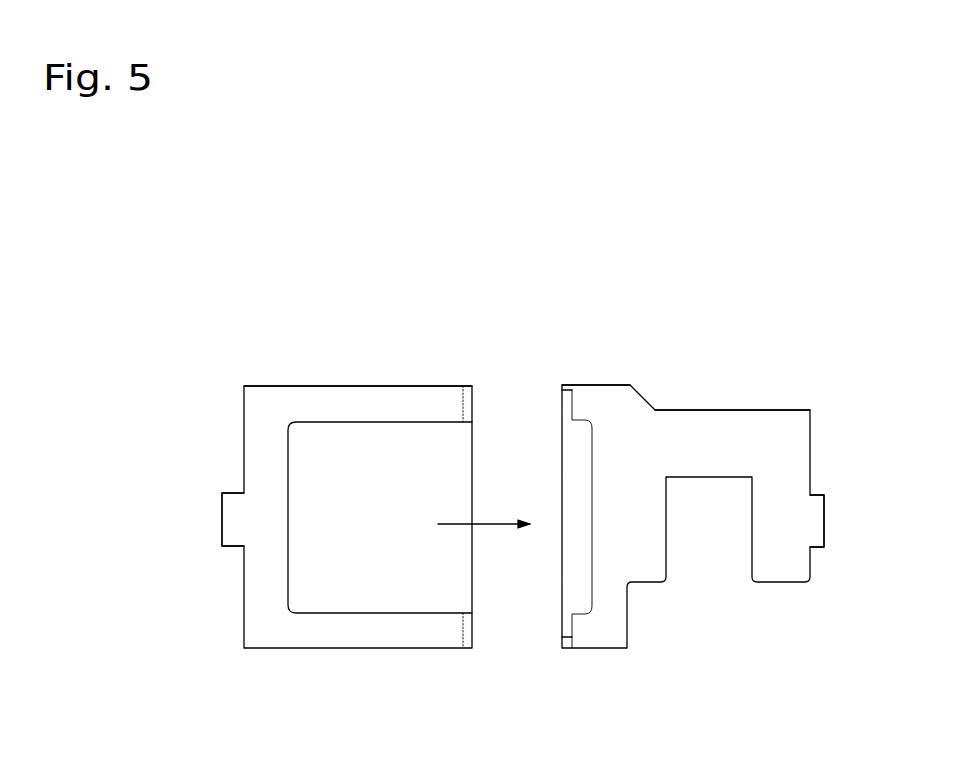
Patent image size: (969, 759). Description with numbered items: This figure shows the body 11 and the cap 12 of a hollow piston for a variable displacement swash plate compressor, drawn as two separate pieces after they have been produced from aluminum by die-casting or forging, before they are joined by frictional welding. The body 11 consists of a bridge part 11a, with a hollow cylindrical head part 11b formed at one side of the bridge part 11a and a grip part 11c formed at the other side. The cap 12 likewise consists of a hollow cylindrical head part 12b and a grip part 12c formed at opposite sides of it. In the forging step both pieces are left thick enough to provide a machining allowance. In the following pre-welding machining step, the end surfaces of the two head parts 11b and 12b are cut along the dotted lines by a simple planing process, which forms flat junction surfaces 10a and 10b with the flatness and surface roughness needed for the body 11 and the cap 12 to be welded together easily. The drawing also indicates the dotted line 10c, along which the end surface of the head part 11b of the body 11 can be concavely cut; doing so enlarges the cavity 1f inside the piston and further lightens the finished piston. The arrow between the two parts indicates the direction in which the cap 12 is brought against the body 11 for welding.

The cap 12 is at (318, 386).
The hollow cylindrical head part 12b is at (350, 393).
The grip part 12c is at (233, 520).
The cavity 1f is at (322, 603).
The junction surface 10b is at (467, 387).
The junction surface 10a is at (562, 390).
The dotted line 10c is at (590, 503).
The body 11 is at (683, 410).
The hollow cylindrical head part 11b is at (602, 395).
The bridge part 11a is at (768, 428).
The grip part 11c is at (822, 520).